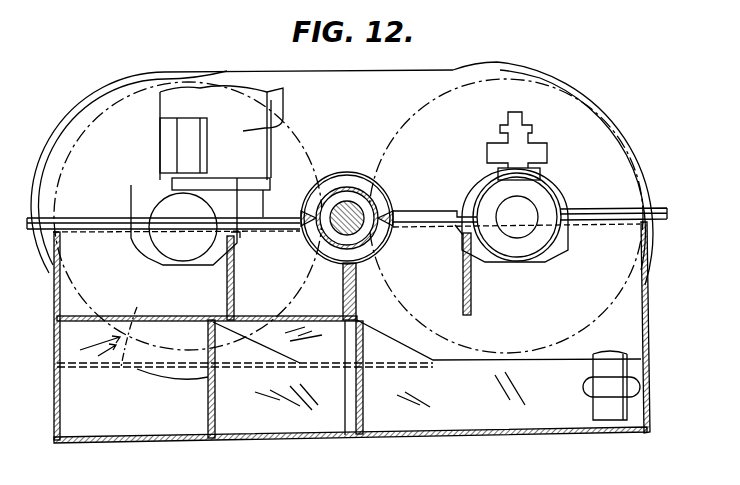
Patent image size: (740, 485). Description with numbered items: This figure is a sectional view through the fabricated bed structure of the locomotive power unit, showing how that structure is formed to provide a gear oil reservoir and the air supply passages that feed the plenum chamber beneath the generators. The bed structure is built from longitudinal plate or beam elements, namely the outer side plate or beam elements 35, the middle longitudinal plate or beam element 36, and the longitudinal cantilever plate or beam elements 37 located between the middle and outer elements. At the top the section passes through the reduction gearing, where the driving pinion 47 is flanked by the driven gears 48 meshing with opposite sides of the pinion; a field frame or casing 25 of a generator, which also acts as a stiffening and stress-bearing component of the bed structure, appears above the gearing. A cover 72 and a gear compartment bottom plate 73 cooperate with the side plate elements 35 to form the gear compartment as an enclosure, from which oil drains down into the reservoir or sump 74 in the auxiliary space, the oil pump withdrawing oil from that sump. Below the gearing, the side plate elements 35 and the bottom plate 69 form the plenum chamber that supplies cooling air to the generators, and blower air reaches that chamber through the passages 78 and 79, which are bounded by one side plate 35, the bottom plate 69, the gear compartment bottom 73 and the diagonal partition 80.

The field frame or casing 25 is at (57, 147).
The cover 72 is at (437, 71).
The driven gears 48 is at (310, 167).
The driving pinion 47 is at (350, 185).
The middle longitudinal plate or beam element 36 is at (345, 303).
The longitudinal cantilever plate or beam elements 37 is at (228, 283).
The outer longitudinal plate or beam elements 35 is at (58, 258).
The bottom plate 69 is at (397, 440).
The passage 79 is at (289, 427).
The diagonal partition 80 is at (208, 402).
The reservoir or sump 74 is at (553, 427).
The passage 78 is at (147, 427).
The bottom plate of gear compartment 73 is at (133, 318).